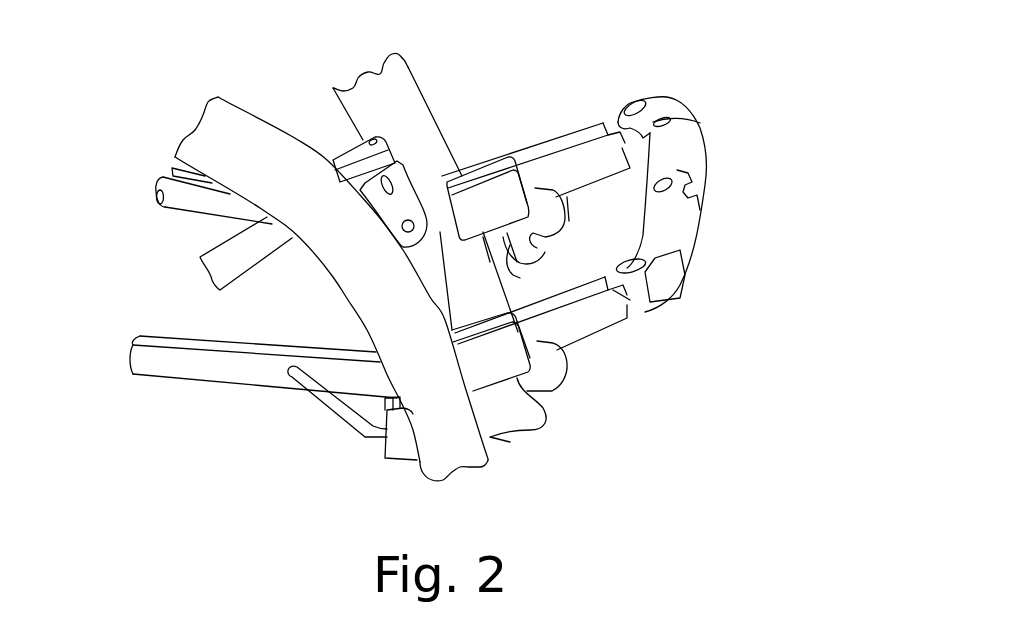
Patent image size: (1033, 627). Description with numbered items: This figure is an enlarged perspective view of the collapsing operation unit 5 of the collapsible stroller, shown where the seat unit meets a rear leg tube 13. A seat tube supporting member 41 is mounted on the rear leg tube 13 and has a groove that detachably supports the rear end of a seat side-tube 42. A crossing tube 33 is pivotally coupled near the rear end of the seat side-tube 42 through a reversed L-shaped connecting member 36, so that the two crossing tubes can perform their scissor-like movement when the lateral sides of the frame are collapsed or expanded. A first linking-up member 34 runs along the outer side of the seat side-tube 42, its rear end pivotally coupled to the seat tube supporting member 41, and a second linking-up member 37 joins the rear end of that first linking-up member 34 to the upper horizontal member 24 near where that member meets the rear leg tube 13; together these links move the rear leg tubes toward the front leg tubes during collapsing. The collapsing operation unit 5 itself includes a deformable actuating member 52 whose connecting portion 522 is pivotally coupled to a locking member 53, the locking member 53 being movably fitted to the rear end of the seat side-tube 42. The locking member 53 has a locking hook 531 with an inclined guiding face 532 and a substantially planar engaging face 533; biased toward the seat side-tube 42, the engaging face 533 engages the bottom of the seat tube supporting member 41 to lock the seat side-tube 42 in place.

The collapsing operation unit 5 is at (640, 258).
The rear leg tube 13 is at (237, 123).
The upper horizontal member 24 is at (386, 460).
The crossing tube 33 is at (340, 160).
The first linking-up member 34 is at (170, 163).
The reversed L-shaped connecting member 36 is at (400, 188).
The second linking-up member 37 is at (340, 413).
The seat tube supporting member 41 is at (481, 163).
The seat side-tube 42 is at (180, 205).
The actuating member 52 is at (697, 165).
The locking member 53 is at (593, 123).
The connecting portion 522 is at (667, 97).
The locking hook 531 is at (563, 205).
The guiding face 532 is at (528, 235).
The engaging face 533 is at (508, 231).